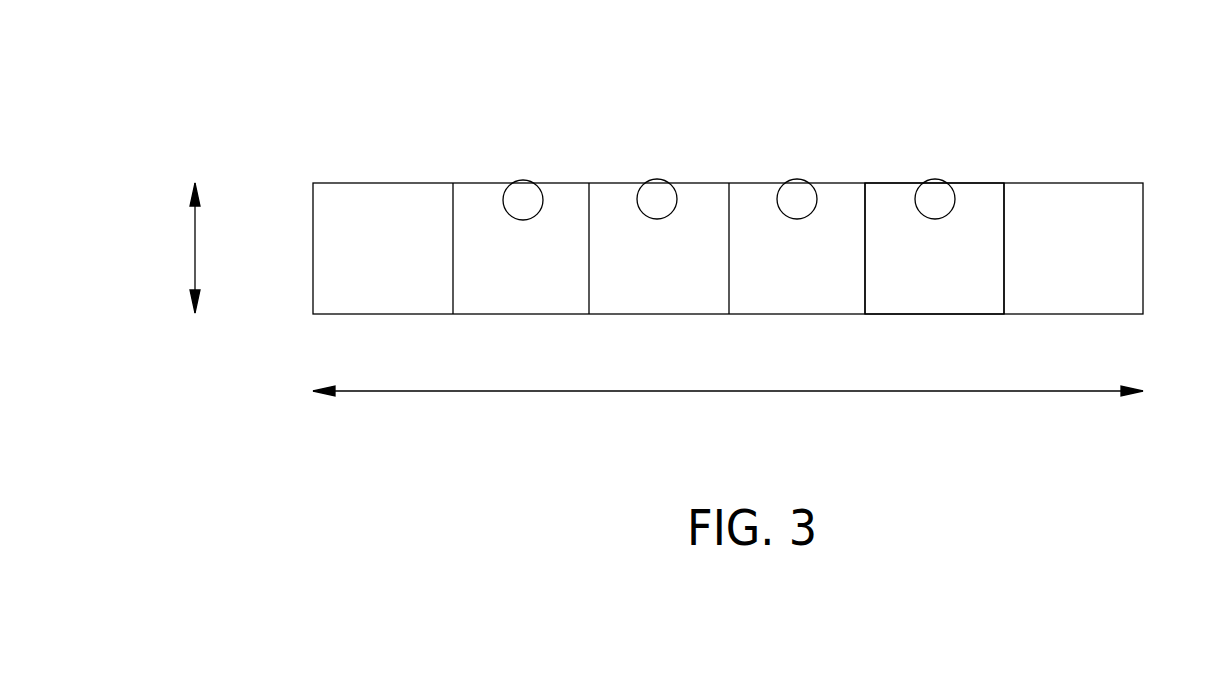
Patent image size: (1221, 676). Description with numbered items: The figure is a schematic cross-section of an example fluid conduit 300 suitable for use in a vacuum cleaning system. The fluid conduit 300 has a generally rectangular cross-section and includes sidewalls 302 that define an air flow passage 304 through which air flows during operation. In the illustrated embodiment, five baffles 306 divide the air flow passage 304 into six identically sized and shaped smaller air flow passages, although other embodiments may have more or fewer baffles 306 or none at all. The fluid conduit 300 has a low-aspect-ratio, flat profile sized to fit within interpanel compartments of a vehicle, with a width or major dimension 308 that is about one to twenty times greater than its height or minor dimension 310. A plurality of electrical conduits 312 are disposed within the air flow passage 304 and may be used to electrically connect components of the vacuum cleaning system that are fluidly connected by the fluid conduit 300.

The fluid conduit 300 is at (338, 112).
The sidewalls 302 is at (1145, 215).
The air flow passage 304 is at (920, 284).
The baffles 306 is at (868, 200).
The major dimension 308 is at (695, 391).
The minor dimension 310 is at (193, 247).
The electrical conduits 312 is at (542, 191).